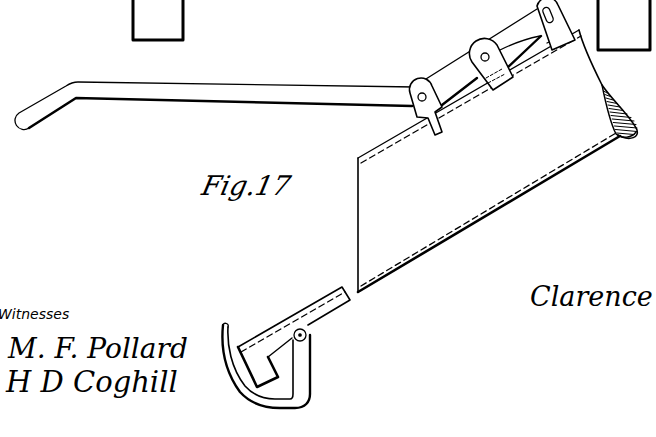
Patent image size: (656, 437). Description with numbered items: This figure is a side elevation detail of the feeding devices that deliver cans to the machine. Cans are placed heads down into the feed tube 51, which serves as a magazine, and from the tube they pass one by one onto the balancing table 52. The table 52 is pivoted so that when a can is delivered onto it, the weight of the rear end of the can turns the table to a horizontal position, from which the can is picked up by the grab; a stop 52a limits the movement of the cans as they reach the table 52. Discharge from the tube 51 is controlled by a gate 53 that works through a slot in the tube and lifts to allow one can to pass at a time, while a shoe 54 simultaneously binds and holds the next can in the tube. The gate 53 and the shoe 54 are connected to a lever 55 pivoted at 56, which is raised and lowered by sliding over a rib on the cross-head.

The feed tube 51 is at (540, 178).
The balancing table 52 is at (311, 338).
The stop 52a is at (250, 302).
The gate 53 is at (417, 88).
The shoe 54 is at (546, 14).
The lever 55 is at (210, 95).
The pivot 56 is at (480, 50).